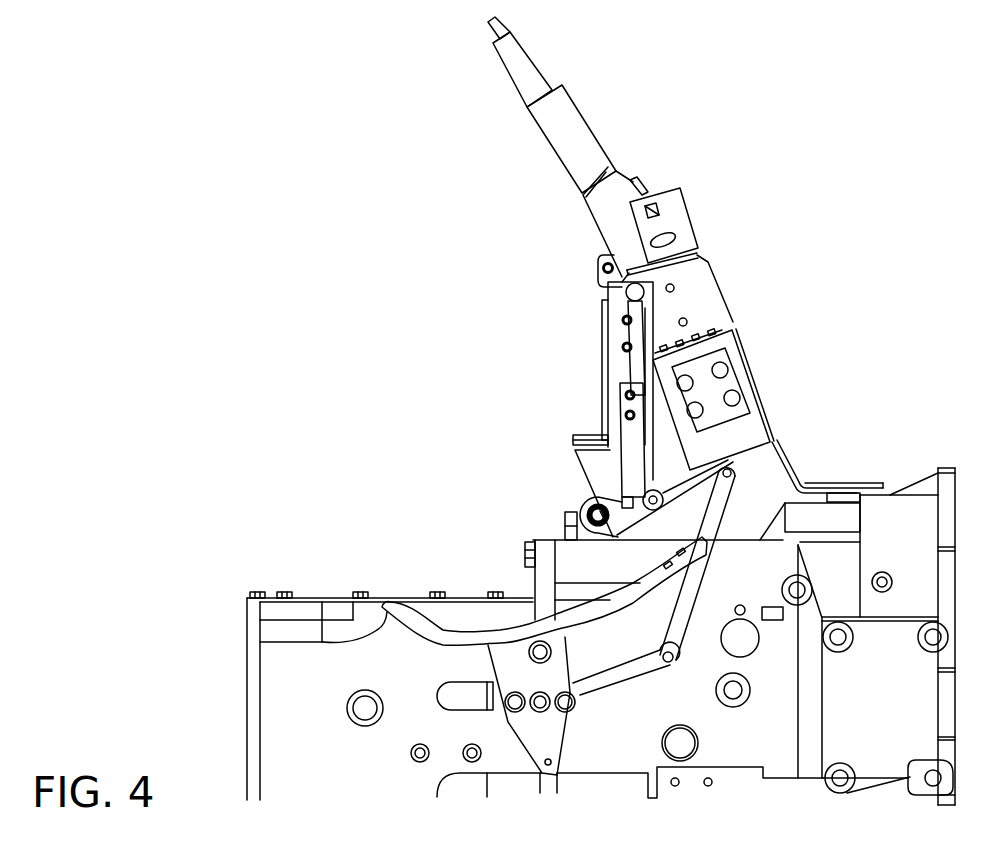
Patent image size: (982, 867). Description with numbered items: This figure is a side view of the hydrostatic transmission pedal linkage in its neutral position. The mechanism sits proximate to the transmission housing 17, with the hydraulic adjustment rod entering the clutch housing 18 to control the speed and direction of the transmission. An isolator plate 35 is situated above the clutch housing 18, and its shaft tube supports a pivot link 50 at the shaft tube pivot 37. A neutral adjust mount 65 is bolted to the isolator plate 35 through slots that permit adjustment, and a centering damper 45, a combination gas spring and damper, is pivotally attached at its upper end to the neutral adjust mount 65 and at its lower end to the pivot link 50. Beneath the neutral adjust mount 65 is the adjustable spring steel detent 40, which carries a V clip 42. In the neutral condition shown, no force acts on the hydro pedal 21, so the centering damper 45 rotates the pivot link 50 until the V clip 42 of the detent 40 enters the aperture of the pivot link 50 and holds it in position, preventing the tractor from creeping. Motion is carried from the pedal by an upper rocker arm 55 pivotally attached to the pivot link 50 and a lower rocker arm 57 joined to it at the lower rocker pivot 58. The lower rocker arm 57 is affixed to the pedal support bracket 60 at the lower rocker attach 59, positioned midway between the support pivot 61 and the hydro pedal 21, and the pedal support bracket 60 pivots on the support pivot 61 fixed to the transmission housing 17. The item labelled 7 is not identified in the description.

The hydraulic cylinder 7 is at (593, 125).
The transmission housing 17 is at (283, 723).
The clutch housing 18 is at (760, 587).
The hydro pedal 21 is at (440, 633).
The isolator plate 35 is at (615, 383).
The shaft tube pivot 37 is at (607, 523).
The adjustable spring steel detent 40 is at (633, 462).
The V clip 42 is at (627, 500).
The centering damper 45 is at (638, 370).
The pivot link 50 is at (695, 480).
The upper rocker arm 55 is at (717, 510).
The lower rocker arm 57 is at (615, 680).
The lower rocker pivot 58 is at (683, 667).
The lower rocker attach 59 is at (533, 713).
The pedal support bracket 60 is at (553, 727).
The support pivot 61 is at (557, 767).
The neutral adjust mount 65 is at (615, 298).